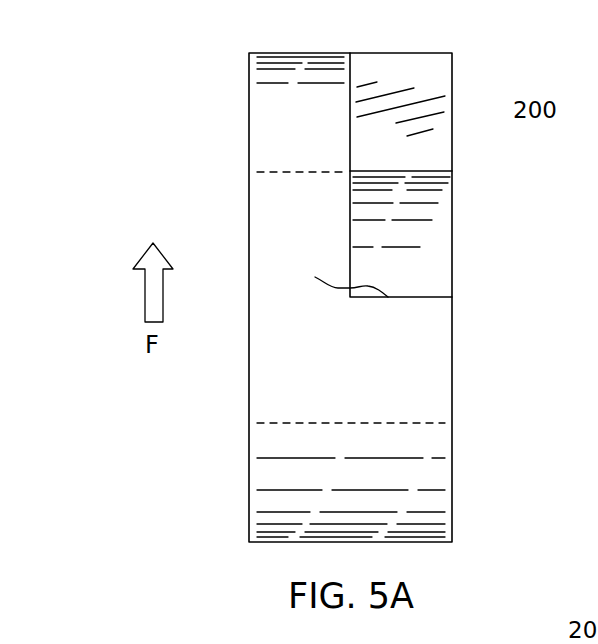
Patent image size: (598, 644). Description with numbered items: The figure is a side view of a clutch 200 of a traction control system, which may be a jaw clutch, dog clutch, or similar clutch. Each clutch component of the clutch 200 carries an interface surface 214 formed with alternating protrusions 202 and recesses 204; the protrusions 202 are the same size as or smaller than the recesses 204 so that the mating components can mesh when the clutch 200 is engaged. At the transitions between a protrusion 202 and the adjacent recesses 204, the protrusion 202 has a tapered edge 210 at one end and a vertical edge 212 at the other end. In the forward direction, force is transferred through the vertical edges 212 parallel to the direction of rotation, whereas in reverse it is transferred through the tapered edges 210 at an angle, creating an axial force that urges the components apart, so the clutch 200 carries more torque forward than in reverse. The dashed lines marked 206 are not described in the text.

The clutch 200 is at (207, 53).
The protrusion 202 is at (453, 480).
The recess 204 is at (350, 268).
The fold lines 206 is at (293, 176).
The tapered edge 210 is at (429, 69).
The vertical edge 212 is at (330, 276).
The interface surface 214 is at (462, 302).